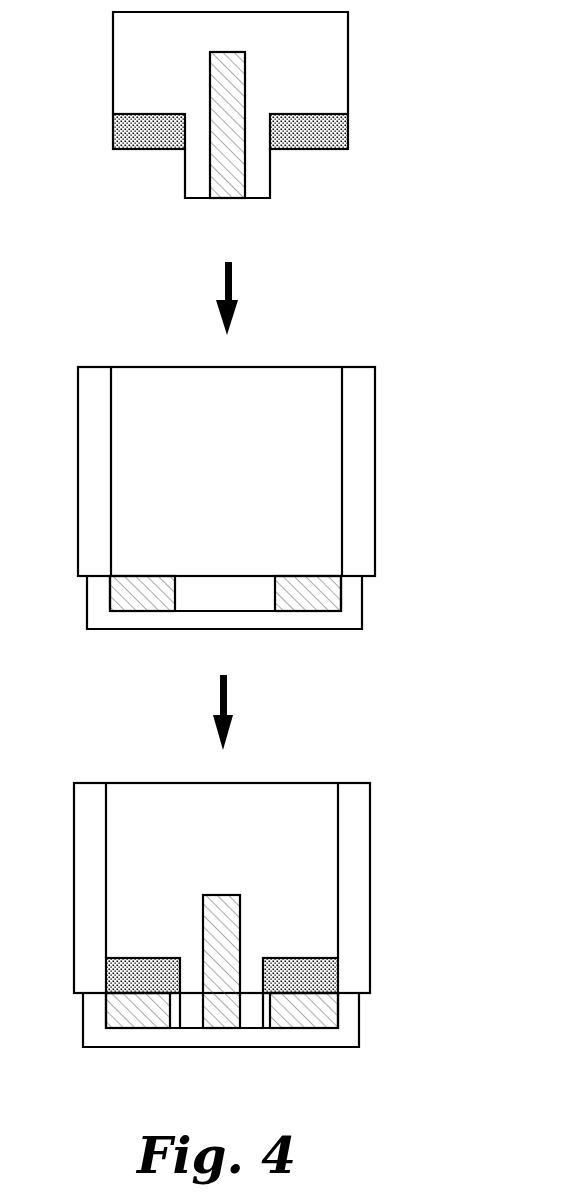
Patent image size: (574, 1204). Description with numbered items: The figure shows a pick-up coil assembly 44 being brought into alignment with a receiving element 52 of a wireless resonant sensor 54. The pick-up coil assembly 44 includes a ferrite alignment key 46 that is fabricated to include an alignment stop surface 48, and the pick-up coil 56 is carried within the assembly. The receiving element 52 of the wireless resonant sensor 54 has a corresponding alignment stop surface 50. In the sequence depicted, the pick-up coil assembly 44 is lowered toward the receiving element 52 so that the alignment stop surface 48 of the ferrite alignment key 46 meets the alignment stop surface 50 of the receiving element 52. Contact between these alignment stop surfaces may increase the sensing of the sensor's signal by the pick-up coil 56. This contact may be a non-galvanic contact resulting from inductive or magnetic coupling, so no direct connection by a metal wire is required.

The pick-up coil assembly 44 is at (252, 119).
The ferrite alignment key 46 is at (233, 180).
The alignment stop surface 48 is at (272, 198).
The alignment stop surface 50 is at (362, 629).
The receiving element 52 is at (416, 419).
The wireless resonant sensor 54 is at (120, 600).
The pick-up coil 56 is at (112, 140).